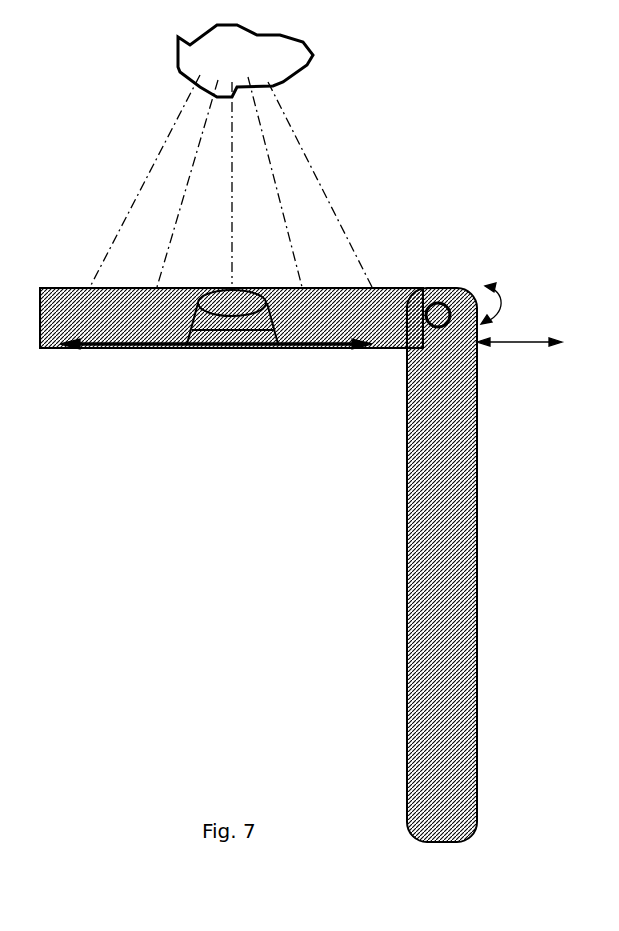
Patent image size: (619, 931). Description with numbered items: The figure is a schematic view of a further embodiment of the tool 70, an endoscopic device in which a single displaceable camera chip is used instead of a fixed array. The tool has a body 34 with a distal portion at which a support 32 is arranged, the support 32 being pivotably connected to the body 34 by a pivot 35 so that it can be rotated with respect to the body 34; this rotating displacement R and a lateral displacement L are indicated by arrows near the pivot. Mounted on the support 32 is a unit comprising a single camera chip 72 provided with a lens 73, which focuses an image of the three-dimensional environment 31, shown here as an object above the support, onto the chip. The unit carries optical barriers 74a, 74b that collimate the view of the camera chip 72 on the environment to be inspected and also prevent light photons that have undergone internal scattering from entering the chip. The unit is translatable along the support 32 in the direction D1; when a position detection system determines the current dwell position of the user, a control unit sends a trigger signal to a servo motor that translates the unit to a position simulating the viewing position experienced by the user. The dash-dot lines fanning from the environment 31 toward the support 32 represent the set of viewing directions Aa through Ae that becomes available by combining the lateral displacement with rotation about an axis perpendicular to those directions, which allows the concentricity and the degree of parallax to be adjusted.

The three-dimensional environment 31 is at (177, 63).
The tool 70 is at (280, 454).
The support 32 is at (422, 285).
The body 34 is at (407, 712).
The pivot 35 is at (445, 300).
The camera chip 72 is at (223, 346).
The lens 73 is at (195, 346).
The optical barrier 74a is at (158, 346).
The optical barrier 74b is at (293, 348).
The translation direction D1 is at (216, 373).
The viewing direction Aa is at (140, 187).
The viewing direction Ae is at (307, 157).
The rotating displacement R is at (500, 290).
The lateral displacement L is at (492, 352).